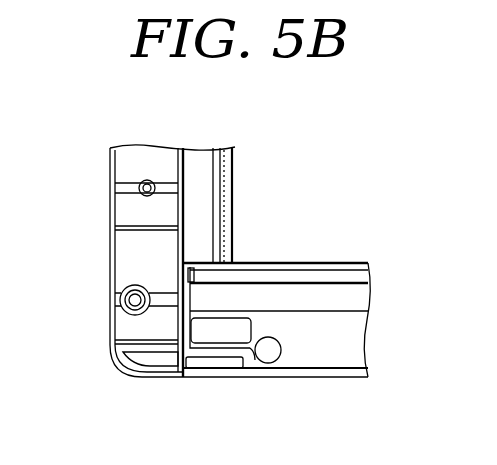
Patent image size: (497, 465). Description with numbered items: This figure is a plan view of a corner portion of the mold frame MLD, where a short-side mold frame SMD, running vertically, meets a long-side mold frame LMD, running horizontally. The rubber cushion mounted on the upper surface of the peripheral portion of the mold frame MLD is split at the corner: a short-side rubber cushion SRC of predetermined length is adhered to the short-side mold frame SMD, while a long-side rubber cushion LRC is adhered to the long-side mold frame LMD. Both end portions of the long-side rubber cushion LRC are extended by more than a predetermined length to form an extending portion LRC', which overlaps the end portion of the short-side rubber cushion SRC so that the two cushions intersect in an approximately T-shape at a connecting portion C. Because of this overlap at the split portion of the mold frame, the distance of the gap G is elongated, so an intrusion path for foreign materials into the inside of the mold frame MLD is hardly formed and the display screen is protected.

The short-side mold frame SMD is at (145, 148).
The short-side rubber cushion SRC is at (223, 147).
The connecting portion C is at (237, 262).
The mold frame MLD is at (330, 263).
The extending portion LRC' is at (114, 262).
The long-side rubber cushion LRC is at (323, 271).
The long-side mold frame LMD is at (358, 347).
The gap G is at (183, 305).